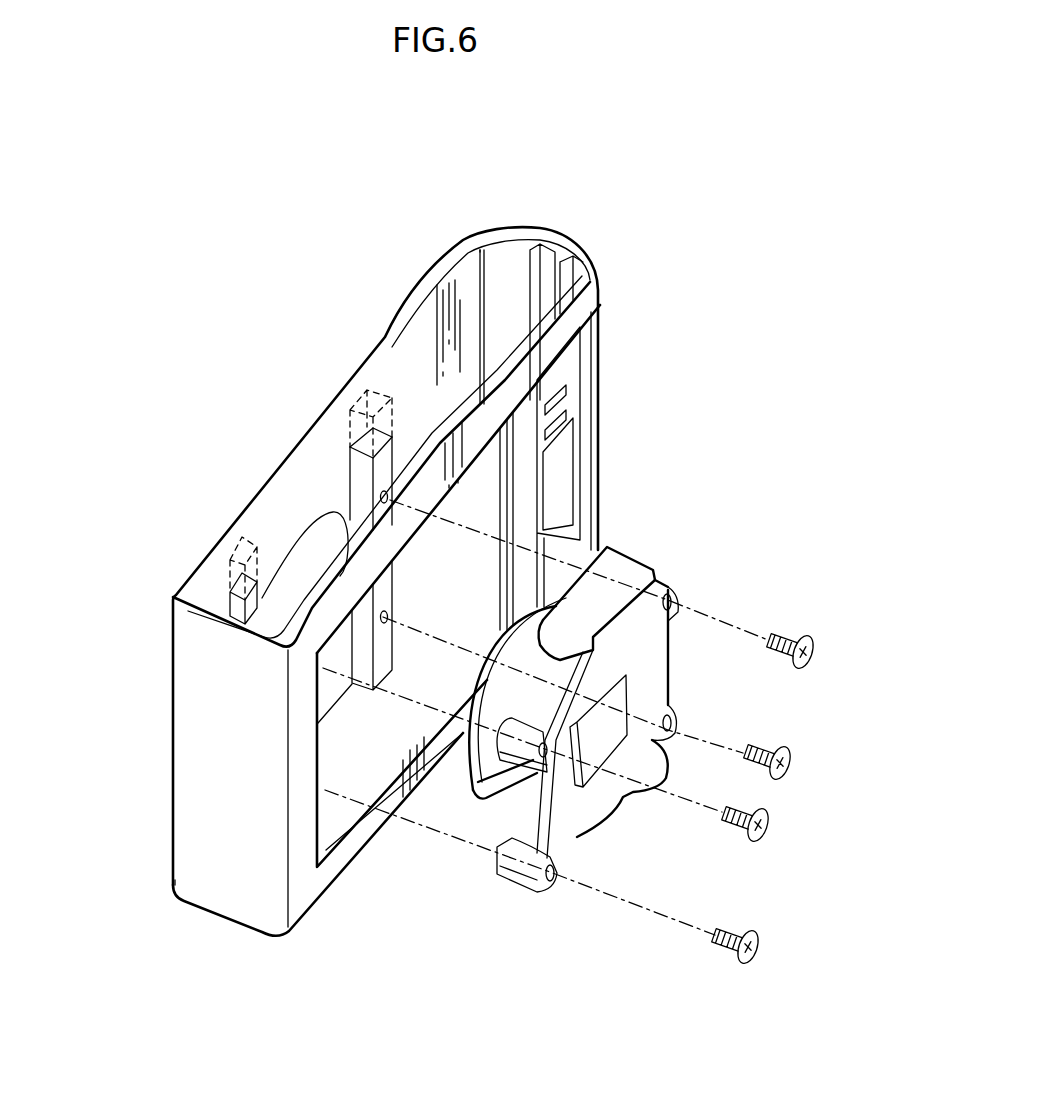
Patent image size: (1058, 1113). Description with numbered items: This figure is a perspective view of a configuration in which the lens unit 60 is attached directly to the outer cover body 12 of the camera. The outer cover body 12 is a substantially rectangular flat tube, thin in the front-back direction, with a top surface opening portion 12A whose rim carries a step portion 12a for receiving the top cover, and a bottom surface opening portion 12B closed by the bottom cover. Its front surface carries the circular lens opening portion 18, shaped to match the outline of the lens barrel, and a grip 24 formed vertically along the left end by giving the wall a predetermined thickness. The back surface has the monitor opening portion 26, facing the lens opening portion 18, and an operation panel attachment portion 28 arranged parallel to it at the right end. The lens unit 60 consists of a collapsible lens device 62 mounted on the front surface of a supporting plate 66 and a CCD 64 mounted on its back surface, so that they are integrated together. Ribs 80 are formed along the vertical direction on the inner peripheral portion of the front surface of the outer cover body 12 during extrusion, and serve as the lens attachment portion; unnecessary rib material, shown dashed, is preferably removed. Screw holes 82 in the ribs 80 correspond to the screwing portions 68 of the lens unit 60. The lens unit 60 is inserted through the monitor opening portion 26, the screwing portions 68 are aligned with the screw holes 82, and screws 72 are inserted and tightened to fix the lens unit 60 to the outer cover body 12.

The outer cover body 12 is at (200, 843).
The top surface opening portion 12A is at (500, 258).
The bottom surface opening portion 12B is at (225, 925).
The step portion 12a is at (520, 230).
The lens opening portion 18 is at (312, 534).
The grip 24 is at (437, 268).
The monitor opening portion 26 is at (335, 838).
The operation panel attachment portion 28 is at (567, 403).
The lens unit 60 is at (615, 692).
The lens device 62 is at (487, 763).
The CCD 64 is at (590, 738).
The supporting plate 66 is at (562, 840).
The screwing portions 68 is at (675, 598).
The screws 72 is at (814, 650).
The ribs 80 is at (355, 445).
The screw holes 82 is at (388, 493).